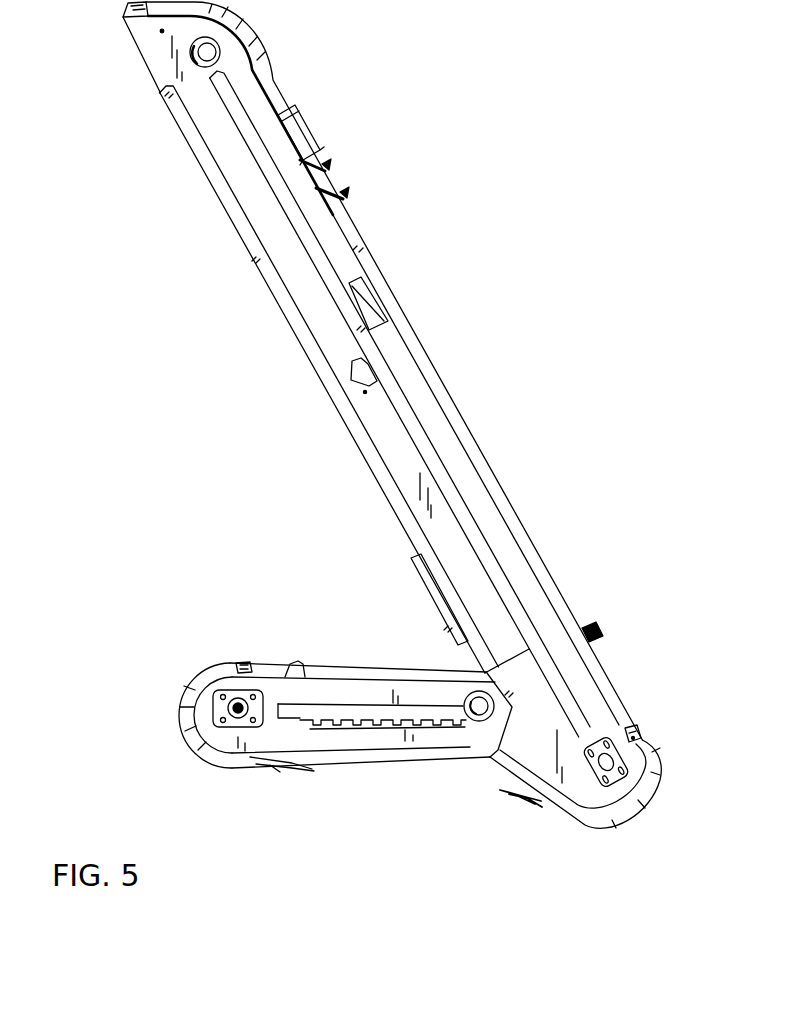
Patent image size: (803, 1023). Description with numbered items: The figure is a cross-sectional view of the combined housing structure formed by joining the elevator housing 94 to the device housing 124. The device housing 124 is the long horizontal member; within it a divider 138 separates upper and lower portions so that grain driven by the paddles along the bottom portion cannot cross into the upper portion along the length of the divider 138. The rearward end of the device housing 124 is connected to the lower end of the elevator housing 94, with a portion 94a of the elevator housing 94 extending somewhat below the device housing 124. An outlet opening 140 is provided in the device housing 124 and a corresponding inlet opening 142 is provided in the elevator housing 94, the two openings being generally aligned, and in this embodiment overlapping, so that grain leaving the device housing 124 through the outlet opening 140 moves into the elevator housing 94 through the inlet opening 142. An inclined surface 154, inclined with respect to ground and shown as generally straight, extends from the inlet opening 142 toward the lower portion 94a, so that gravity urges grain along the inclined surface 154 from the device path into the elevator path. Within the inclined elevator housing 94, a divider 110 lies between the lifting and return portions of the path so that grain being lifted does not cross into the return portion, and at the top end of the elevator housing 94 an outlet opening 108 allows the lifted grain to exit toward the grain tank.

The outlet opening 108 is at (137, 69).
The elevator housing 94 is at (270, 292).
The divider 110 is at (318, 263).
The device housing 124 is at (337, 665).
The divider 138 is at (350, 730).
The outlet opening 140 is at (486, 726).
The inlet opening 142 is at (510, 683).
The portion of the elevator housing 94a is at (643, 741).
The inclined surface 154 is at (540, 803).